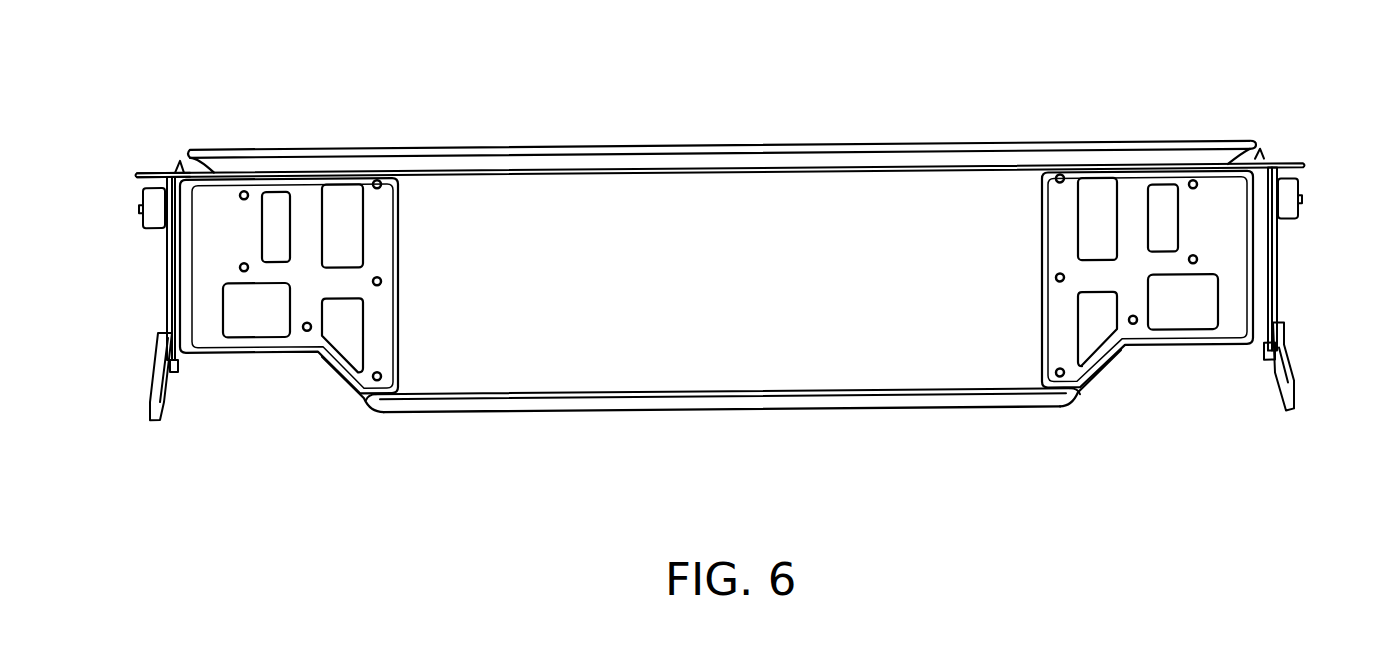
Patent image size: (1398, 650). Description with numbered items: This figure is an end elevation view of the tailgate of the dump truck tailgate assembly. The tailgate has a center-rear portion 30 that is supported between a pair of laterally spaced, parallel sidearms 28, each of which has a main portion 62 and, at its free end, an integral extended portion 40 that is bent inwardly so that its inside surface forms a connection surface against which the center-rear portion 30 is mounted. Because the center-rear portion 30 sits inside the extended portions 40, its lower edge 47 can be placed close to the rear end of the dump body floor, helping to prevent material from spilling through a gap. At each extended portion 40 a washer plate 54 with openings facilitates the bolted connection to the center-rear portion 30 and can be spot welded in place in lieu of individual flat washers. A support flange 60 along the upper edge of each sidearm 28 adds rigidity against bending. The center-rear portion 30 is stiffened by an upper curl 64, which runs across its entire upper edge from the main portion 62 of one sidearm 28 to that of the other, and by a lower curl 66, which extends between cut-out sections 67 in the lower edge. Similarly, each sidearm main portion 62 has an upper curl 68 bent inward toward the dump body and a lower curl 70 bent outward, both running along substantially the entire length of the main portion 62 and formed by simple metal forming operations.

The sidearm 28 is at (165, 285).
The center-rear portion 30 is at (892, 285).
The extended portion 40 is at (268, 312).
The lower edge 47 is at (497, 417).
The washer plate 54 is at (375, 323).
The support flange 60 is at (152, 173).
The main portion 62 is at (165, 240).
The upper curl 64 is at (750, 155).
The lower curl 66 is at (810, 410).
The cut-out section 67 is at (308, 356).
The upper sidearm curl 68 is at (173, 173).
The lower sidearm curl 70 is at (165, 402).